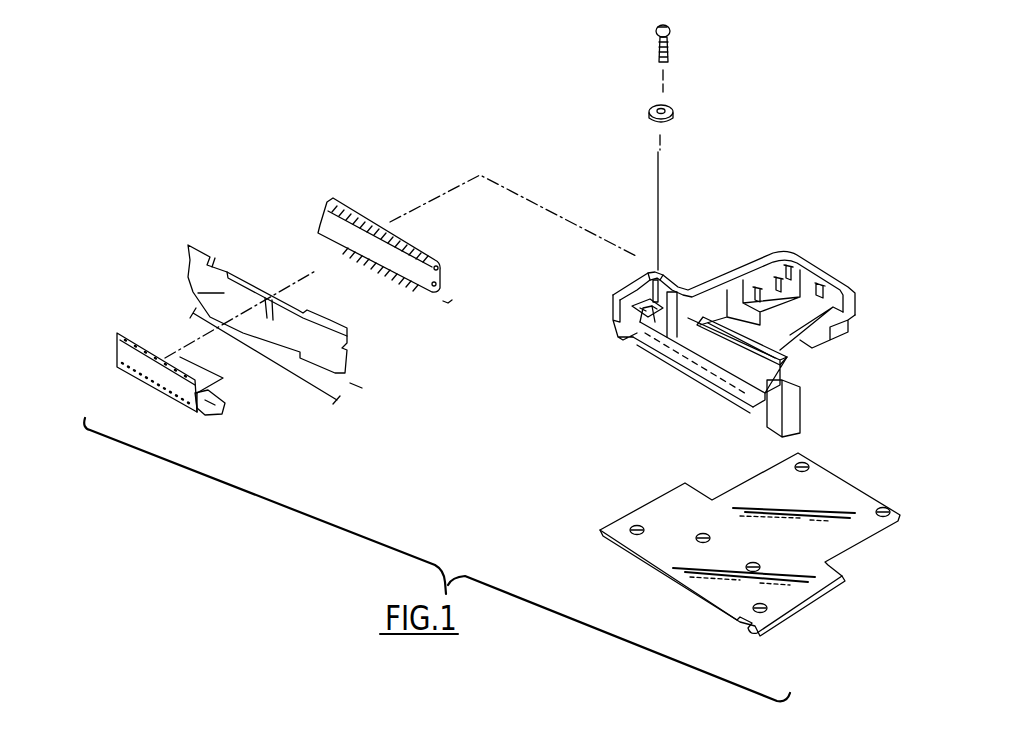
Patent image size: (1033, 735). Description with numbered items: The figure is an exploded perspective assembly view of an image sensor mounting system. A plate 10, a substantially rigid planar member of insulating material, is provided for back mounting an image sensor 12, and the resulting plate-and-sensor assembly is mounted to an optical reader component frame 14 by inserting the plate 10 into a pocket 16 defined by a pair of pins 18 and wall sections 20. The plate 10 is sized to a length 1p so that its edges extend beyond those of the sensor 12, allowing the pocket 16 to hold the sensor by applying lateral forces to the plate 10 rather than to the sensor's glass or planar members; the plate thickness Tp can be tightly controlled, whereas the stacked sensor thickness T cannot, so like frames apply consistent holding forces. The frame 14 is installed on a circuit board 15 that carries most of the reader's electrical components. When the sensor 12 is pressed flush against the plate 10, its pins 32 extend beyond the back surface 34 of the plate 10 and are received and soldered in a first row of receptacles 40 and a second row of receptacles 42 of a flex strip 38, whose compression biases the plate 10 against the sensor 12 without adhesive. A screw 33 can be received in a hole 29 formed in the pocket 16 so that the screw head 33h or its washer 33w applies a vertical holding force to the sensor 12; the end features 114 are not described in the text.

The plate 10 is at (184, 251).
The image sensor 12 is at (318, 222).
The optical reader component frame 14 is at (833, 347).
The circuit board 15 is at (805, 593).
The pocket 16 is at (665, 272).
The pins 18 is at (640, 295).
The wall sections 20 is at (690, 292).
The hole 29 is at (648, 268).
The pins 32 is at (352, 214).
The screw 33 is at (672, 58).
The screw head 33h is at (672, 28).
The washer 33w is at (674, 115).
The back surface 34 is at (267, 309).
The flex strip 38 is at (200, 407).
The first row of receptacles 40 is at (115, 333).
The second row of receptacles 42 is at (192, 410).
The end contact 114 is at (420, 269).
The terminal T is at (452, 304).
The plate thickness Tp is at (355, 383).
The plate length 1p is at (258, 358).